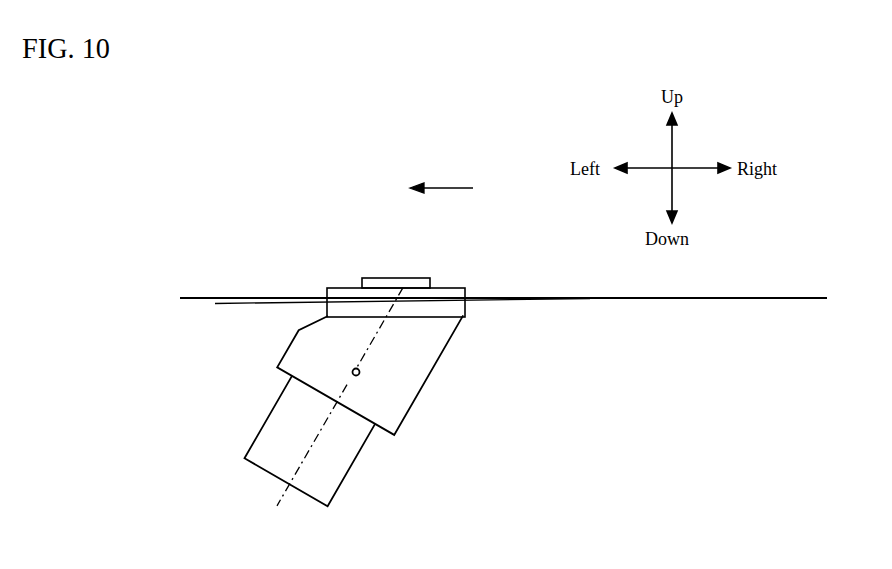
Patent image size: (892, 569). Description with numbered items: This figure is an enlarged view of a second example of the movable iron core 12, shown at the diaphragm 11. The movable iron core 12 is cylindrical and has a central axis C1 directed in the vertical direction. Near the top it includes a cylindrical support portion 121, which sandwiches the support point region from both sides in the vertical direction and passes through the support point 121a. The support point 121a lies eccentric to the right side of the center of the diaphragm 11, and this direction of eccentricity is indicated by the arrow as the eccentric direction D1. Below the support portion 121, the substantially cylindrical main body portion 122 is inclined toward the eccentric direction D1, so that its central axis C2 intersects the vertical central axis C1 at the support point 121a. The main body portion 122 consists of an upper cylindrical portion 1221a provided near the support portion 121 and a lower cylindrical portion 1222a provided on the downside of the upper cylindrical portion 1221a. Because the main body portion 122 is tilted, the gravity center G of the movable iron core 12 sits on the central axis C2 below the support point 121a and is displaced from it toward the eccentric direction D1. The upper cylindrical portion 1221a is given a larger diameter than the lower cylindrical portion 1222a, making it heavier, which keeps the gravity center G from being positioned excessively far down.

The diaphragm 11 is at (540, 302).
The movable iron core 12 is at (110, 303).
The support portion 121 is at (286, 277).
The support point 121a is at (393, 300).
The main body portion 122 is at (168, 348).
The upper cylindrical portion 1221a is at (292, 342).
The lower cylindrical portion 1222a is at (272, 412).
The central axis C1 is at (393, 285).
The central axis of the main body portion C2 is at (296, 468).
The gravity center G is at (360, 372).
The eccentric direction D1 is at (441, 175).